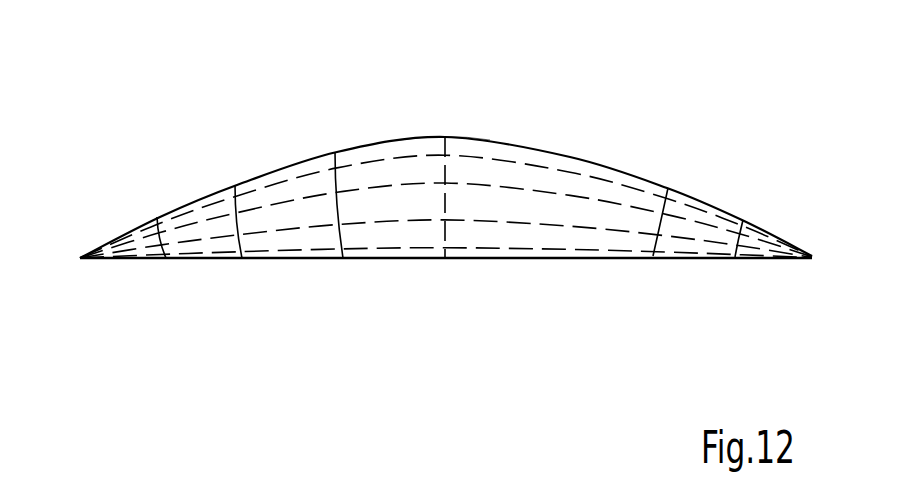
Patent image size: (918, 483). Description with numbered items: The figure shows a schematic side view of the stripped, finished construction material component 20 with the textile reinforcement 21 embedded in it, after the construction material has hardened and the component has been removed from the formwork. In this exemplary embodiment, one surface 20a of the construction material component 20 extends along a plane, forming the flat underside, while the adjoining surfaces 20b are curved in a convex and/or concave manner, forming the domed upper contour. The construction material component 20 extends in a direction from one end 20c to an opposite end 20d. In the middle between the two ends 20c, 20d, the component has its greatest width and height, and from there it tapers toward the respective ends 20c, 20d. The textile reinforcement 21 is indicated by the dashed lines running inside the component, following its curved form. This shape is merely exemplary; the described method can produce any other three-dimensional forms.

The construction material component 20 is at (628, 154).
The surface 20a is at (295, 261).
The adjoining surfaces 20b is at (394, 143).
The end 20c is at (82, 259).
The opposite end 20d is at (810, 257).
The textile reinforcement 21 is at (552, 206).